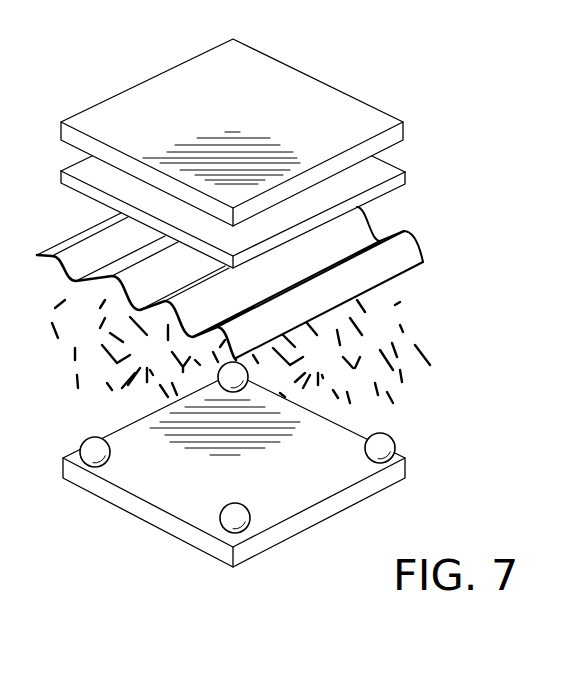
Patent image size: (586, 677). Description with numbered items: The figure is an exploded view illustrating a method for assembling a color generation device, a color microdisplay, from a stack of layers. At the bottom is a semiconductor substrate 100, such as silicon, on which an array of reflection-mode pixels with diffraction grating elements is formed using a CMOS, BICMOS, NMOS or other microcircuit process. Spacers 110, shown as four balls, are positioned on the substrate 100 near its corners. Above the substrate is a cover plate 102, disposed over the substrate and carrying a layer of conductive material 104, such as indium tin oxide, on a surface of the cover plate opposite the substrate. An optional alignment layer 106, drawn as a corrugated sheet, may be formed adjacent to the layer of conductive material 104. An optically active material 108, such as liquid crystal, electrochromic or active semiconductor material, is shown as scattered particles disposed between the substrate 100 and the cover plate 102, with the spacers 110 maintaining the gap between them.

The semiconductor substrate 100 is at (407, 462).
The cover plate 102 is at (404, 123).
The layer of conductive material 104 is at (406, 172).
The alignment layer 106 is at (425, 241).
The optically active material 108 is at (448, 346).
The spacers 110 is at (110, 452).